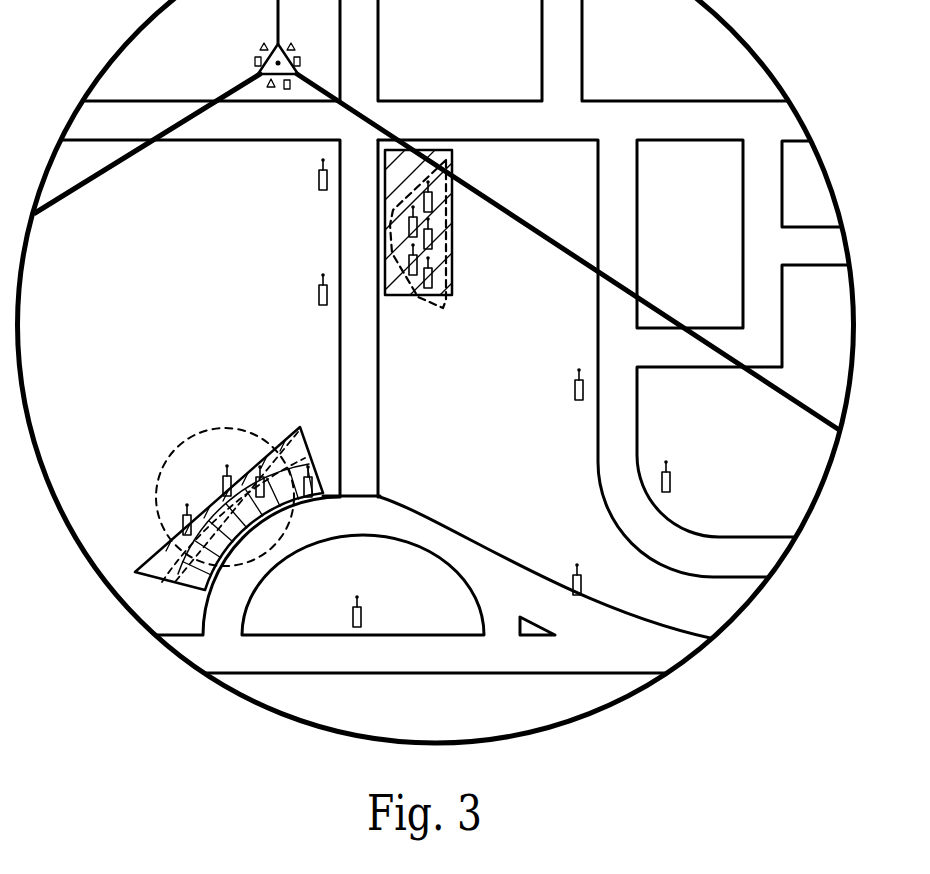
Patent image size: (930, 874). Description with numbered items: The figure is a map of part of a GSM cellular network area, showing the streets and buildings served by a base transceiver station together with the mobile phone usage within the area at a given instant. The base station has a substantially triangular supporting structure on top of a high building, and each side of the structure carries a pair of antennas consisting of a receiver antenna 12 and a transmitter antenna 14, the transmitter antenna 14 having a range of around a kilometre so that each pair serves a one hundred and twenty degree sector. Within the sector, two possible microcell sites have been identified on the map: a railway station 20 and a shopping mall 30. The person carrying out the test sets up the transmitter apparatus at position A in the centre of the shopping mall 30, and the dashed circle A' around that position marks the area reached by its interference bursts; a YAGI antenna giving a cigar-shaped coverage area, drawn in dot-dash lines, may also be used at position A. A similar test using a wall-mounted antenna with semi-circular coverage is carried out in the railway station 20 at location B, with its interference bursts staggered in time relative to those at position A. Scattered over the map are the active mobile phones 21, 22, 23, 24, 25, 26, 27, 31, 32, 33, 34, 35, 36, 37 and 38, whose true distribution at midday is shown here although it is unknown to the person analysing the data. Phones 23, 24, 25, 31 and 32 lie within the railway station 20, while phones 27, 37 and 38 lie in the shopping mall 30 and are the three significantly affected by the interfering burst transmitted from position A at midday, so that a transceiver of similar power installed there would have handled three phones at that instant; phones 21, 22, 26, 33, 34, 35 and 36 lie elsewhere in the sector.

The receiver antenna 12 is at (270, 90).
The transmitter antenna 14 is at (289, 91).
The railway station 20 is at (452, 283).
The active mobile phone 21 is at (311, 198).
The active mobile phone 22 is at (312, 302).
The active mobile phone 23 is at (427, 292).
The active mobile phone 24 is at (430, 243).
The active mobile phone 25 is at (434, 200).
The active mobile phone 26 is at (313, 492).
The active mobile phone 27 is at (212, 472).
The shopping mall 30 is at (267, 440).
The active mobile phone 31 is at (410, 226).
The active mobile phone 32 is at (414, 278).
The active mobile phone 33 is at (573, 392).
The active mobile phone 34 is at (672, 480).
The active mobile phone 35 is at (583, 585).
The active mobile phone 36 is at (364, 613).
The active mobile phone 37 is at (290, 503).
The active mobile phone 38 is at (182, 522).
The position A is at (219, 507).
The coverage area A' is at (225, 466).
The location B is at (455, 232).